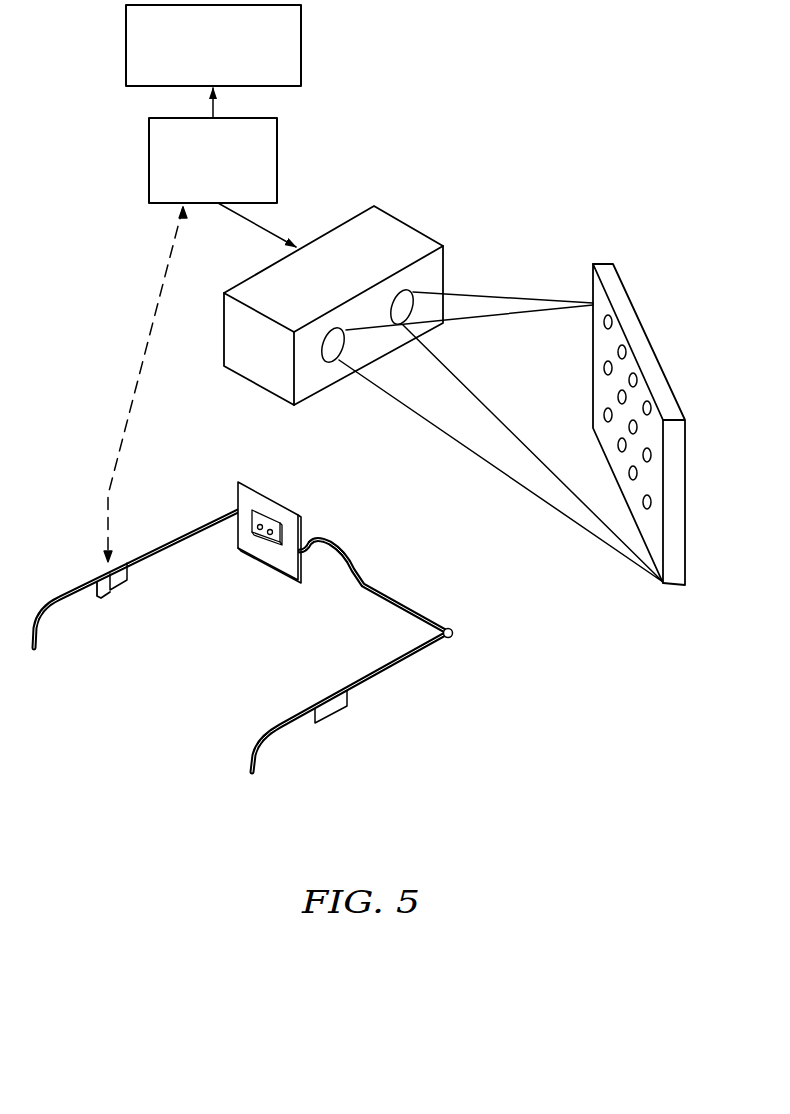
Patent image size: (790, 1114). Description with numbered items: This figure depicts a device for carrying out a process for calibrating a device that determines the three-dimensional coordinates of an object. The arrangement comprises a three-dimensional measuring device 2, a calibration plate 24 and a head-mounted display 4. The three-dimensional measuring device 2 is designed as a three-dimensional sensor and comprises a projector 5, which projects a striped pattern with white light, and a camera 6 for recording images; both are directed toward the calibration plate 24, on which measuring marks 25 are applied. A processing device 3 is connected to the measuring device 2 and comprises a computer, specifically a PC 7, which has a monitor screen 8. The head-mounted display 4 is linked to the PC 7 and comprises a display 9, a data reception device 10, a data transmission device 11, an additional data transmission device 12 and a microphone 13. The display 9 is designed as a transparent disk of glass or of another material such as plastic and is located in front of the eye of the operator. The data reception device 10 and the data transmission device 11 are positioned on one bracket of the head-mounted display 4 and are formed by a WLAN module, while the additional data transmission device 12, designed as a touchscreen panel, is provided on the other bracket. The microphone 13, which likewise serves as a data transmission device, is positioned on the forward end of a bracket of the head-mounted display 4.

The 3D measuring device 2 is at (449, 216).
The processing device 3 is at (337, 113).
The head-mounted display 4 is at (353, 732).
The projector 5 is at (335, 350).
The camera 6 is at (413, 298).
The PC 7 is at (278, 163).
The monitor screen 8 is at (302, 45).
The display 9 is at (290, 567).
The data reception device 10 is at (107, 587).
The data transmission device 11 is at (120, 578).
The additional data transmission device 12 is at (328, 712).
The microphone 13 is at (453, 637).
The calibration plate 24 is at (603, 392).
The measuring marks 25 is at (620, 352).